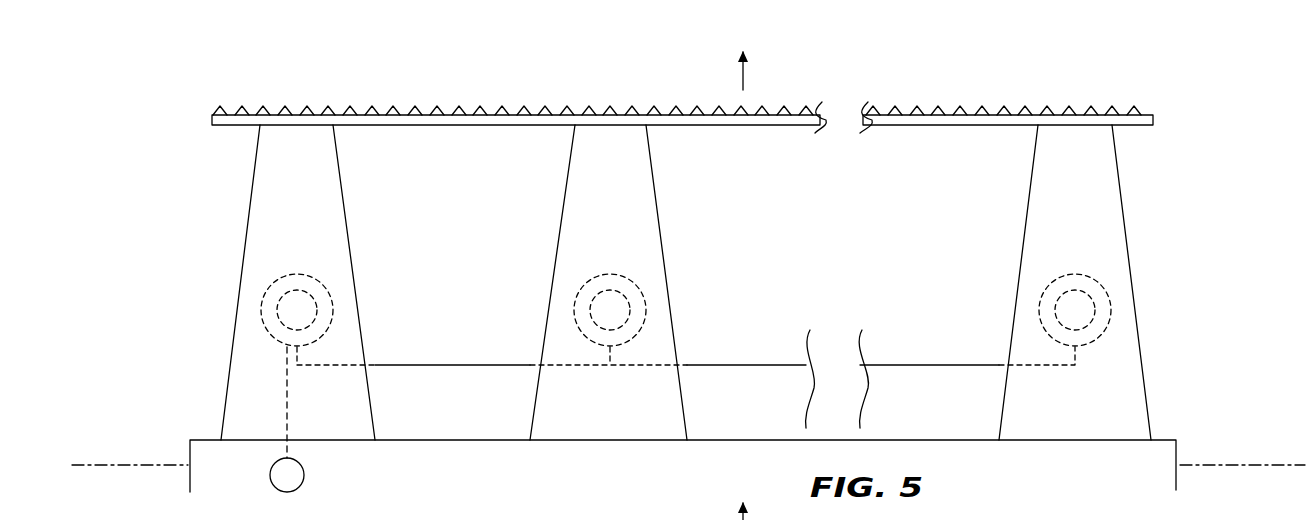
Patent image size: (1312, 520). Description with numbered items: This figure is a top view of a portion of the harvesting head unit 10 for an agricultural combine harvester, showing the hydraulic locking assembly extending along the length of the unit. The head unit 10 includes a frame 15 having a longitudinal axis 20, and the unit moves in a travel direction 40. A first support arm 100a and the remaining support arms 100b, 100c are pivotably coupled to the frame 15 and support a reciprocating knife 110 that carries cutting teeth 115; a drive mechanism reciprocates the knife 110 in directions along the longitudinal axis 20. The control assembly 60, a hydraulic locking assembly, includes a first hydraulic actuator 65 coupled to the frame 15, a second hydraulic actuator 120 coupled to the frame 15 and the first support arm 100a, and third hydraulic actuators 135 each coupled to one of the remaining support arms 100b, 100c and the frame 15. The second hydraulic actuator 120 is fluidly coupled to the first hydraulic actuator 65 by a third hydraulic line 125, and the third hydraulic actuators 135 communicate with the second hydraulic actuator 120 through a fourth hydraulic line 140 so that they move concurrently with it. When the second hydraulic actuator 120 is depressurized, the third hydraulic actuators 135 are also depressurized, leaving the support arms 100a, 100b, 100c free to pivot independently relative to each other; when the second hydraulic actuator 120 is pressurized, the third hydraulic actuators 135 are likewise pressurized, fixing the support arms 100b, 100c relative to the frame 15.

The harvesting head unit 10 is at (1256, 163).
The frame 15 is at (1178, 454).
The longitudinal axis 20 is at (141, 462).
The travel direction 40 is at (738, 70).
The control assembly 60 is at (195, 238).
The first hydraulic actuator 65 is at (305, 469).
The first support arm 100a is at (347, 203).
The support arm 100b is at (657, 195).
The support arm 100c is at (1122, 196).
The reciprocating knife 110 is at (1158, 102).
The cutting teeth 115 is at (398, 107).
The second hydraulic actuator 120 is at (293, 272).
The third hydraulic line 125 is at (288, 402).
The third hydraulic actuators 135 is at (605, 275).
The fourth hydraulic line 140 is at (441, 363).